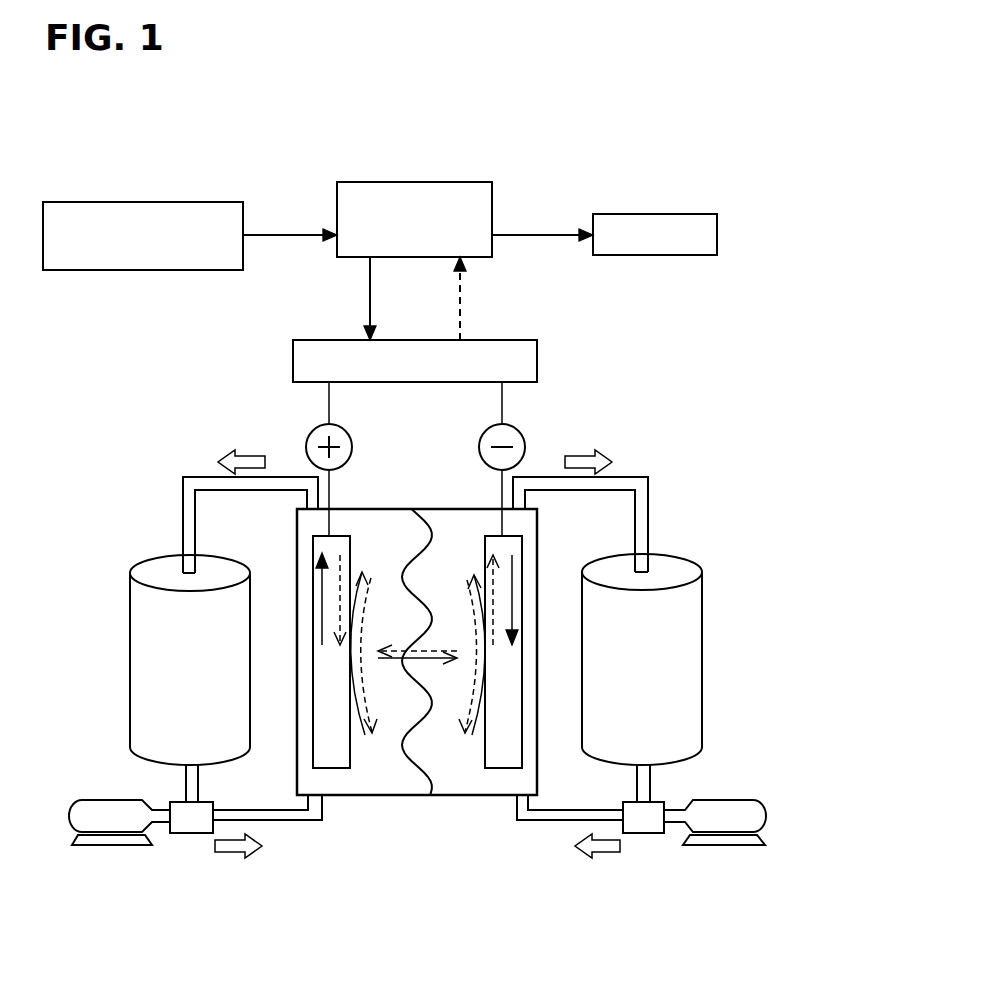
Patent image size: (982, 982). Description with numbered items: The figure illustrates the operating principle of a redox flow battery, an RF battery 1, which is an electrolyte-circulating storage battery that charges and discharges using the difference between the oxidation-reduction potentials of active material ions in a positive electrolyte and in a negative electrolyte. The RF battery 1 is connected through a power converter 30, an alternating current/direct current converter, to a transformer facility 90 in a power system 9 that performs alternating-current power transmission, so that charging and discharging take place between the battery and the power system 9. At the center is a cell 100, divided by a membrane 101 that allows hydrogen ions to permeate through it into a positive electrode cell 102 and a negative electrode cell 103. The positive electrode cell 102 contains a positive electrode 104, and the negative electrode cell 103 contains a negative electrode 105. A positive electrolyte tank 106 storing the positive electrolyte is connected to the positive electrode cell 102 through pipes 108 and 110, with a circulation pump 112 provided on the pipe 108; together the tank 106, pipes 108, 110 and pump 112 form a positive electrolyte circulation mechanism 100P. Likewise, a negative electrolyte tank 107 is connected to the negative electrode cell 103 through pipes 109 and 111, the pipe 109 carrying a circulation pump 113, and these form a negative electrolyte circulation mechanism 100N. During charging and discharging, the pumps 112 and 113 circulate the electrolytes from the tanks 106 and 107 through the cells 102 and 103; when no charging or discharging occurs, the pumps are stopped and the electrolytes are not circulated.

The RF battery 1 is at (750, 347).
The power system 9 is at (285, 235).
The transformer facility 90 is at (448, 182).
The power converter 30 is at (292, 356).
The cell 100 is at (485, 878).
The membrane 101 is at (428, 778).
The positive electrode cell 102 is at (357, 797).
The negative electrode cell 103 is at (482, 797).
The positive electrode 104 is at (313, 755).
The negative electrode 105 is at (522, 755).
The positive electrolyte tank 106 is at (147, 560).
The negative electrolyte tank 107 is at (683, 560).
The pipe 108 is at (290, 821).
The pipe 109 is at (548, 821).
The pipe 110 is at (198, 477).
The pipe 111 is at (633, 477).
The circulation pump 112 is at (95, 800).
The circulation pump 113 is at (745, 800).
The positive electrolyte circulation mechanism 100P is at (143, 868).
The negative electrolyte circulation mechanism 100N is at (694, 868).